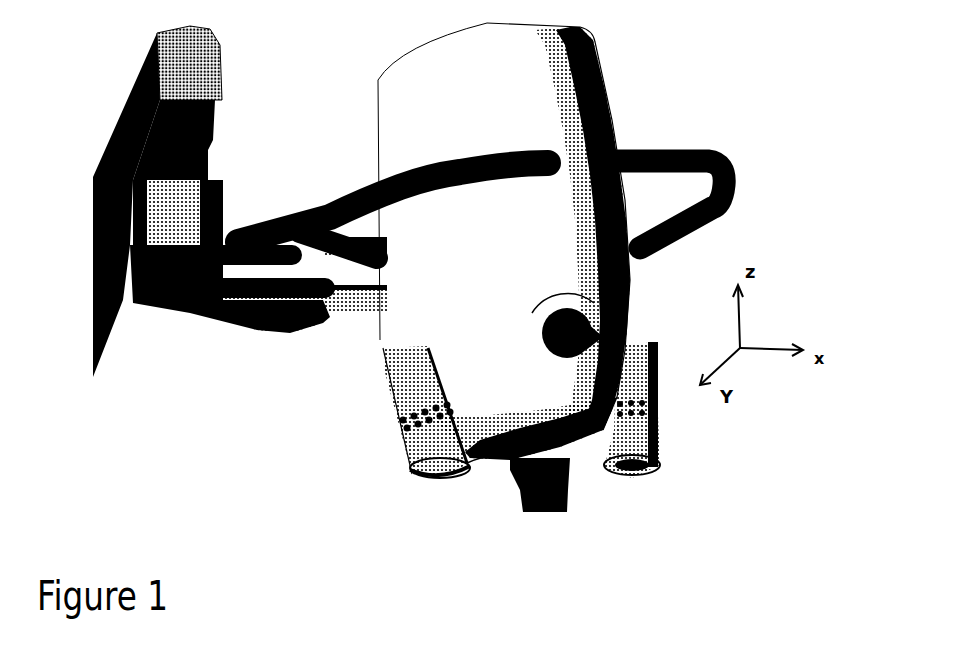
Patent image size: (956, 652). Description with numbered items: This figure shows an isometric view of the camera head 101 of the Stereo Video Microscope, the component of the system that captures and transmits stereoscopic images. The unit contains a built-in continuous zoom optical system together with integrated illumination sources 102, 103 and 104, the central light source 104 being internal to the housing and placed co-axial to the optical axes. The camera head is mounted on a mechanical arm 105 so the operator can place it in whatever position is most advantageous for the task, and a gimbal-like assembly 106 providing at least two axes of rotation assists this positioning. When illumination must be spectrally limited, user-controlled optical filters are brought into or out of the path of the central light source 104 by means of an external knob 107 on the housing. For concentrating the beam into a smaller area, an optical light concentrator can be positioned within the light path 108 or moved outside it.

The camera head 101 is at (612, 78).
The integrated illumination source 102 is at (402, 468).
The integrated illumination source 103 is at (670, 458).
The central light source 104 is at (540, 530).
The mechanical arm 105 is at (223, 330).
The gimbal-like assembly 106 is at (720, 162).
The external knob 107 is at (608, 328).
The optical light concentrator position within light path 108 is at (503, 494).